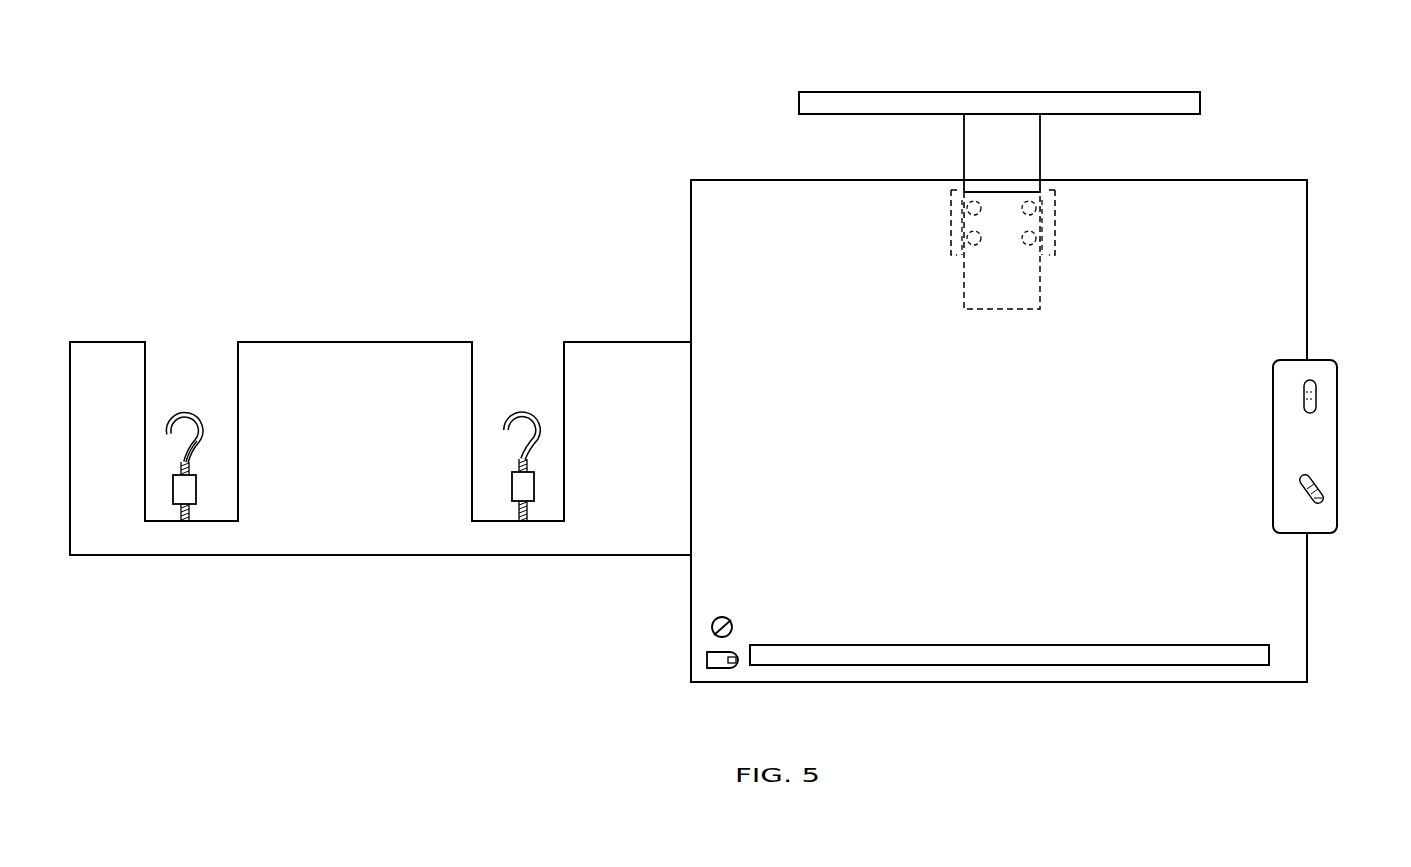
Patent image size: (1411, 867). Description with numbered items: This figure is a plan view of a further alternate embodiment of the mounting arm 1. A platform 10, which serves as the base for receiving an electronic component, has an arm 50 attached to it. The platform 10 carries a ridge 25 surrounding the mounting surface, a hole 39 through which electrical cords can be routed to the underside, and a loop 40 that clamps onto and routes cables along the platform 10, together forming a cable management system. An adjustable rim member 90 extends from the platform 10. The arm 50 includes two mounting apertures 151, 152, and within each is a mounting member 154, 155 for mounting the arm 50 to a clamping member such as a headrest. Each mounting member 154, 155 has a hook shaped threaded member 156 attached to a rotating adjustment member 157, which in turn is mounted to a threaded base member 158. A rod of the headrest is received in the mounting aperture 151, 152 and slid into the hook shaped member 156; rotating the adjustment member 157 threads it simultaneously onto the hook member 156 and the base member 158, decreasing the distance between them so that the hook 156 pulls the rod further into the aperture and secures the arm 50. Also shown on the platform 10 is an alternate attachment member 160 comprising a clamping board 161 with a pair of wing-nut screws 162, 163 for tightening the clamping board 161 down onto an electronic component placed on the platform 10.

The mounting arm 1 is at (574, 190).
The platform 10 is at (1307, 255).
The ridge 25 is at (1130, 650).
The hole 39 is at (727, 620).
The loop 40 is at (718, 660).
The arm 50 is at (377, 558).
The adjustable rim member 90 is at (1091, 105).
The mounting aperture 151 is at (148, 357).
The mounting aperture 152 is at (474, 356).
The mounting member 154 is at (193, 418).
The mounting member 155 is at (523, 417).
The hook shaped threaded member 156 is at (203, 437).
The rotating adjustment member 157 is at (183, 493).
The threaded base member 158 is at (186, 510).
The attachment member 160 is at (1373, 440).
The clamping board 161 is at (1337, 503).
The wing-nut screw 162 is at (1318, 500).
The wing-nut screw 163 is at (1312, 385).